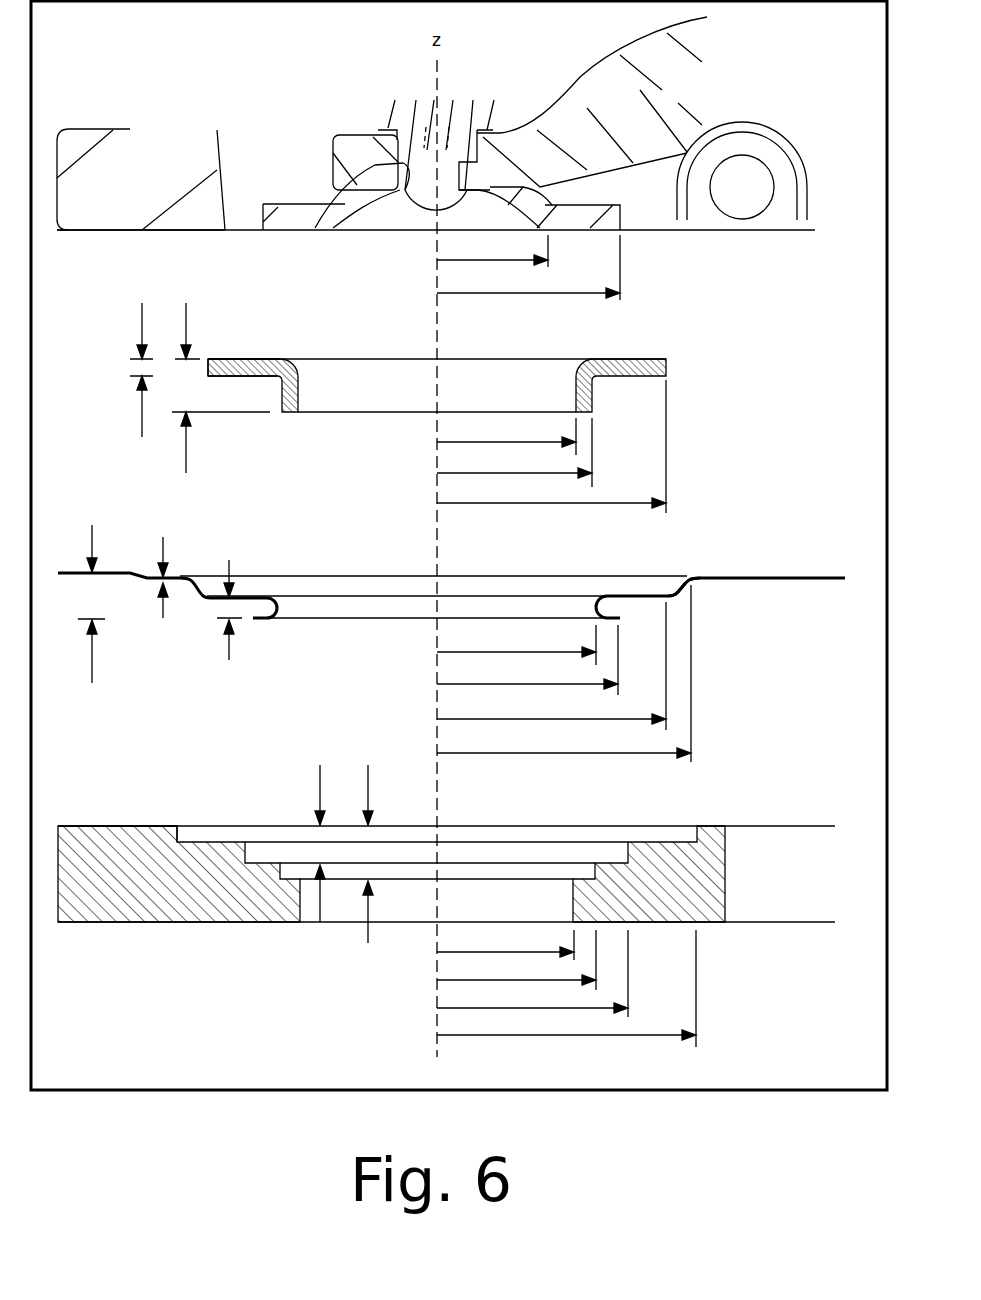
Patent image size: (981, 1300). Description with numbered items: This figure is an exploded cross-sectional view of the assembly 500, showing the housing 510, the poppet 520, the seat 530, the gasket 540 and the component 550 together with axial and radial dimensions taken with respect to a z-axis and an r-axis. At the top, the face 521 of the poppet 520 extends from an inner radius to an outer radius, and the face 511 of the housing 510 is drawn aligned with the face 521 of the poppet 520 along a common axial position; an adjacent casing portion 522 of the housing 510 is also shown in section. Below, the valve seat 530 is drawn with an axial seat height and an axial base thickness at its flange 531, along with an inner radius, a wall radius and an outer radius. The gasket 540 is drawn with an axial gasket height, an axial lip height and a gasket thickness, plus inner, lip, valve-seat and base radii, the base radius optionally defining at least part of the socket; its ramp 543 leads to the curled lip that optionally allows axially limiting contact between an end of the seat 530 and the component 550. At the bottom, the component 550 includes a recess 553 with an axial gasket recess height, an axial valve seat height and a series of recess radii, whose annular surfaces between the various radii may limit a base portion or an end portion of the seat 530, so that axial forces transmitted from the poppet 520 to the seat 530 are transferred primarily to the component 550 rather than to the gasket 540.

The assembly 500 is at (117, 46).
The housing 510 is at (168, 193).
The face of the housing 511 is at (168, 230).
The poppet 520 is at (323, 202).
The face of the poppet 521 is at (283, 230).
The volute / outer casing 522 is at (597, 70).
The valve seat 530 is at (666, 359).
The spacer plate flange 531 is at (232, 359).
The gasket 540 is at (755, 577).
The gasket ramp 543 is at (687, 577).
The component 550 is at (725, 826).
The recess 553 is at (177, 826).